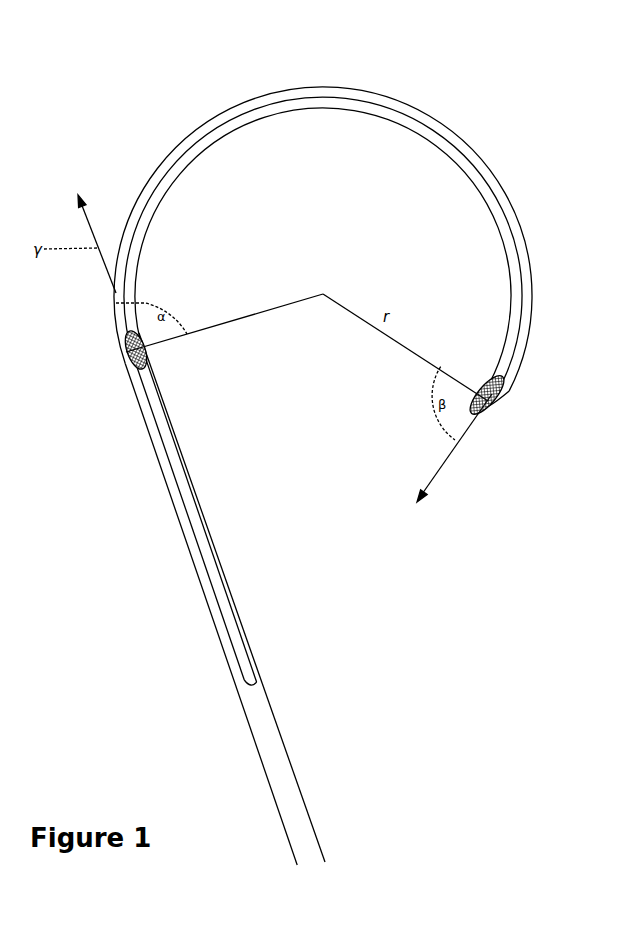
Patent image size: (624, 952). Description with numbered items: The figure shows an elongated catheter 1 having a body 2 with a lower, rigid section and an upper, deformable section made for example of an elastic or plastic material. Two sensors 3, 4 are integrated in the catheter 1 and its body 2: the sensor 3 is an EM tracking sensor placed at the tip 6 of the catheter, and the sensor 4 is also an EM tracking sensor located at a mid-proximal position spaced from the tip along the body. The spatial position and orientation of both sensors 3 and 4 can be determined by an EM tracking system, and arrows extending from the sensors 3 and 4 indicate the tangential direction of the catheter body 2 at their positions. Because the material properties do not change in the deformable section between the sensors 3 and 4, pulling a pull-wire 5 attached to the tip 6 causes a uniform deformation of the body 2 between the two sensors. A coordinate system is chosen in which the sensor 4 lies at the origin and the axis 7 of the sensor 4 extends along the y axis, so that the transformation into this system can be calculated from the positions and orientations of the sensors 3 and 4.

The elongated catheter 1 is at (148, 492).
The catheter body 2 is at (273, 93).
The sensor 3 is at (505, 396).
The sensor 4 is at (121, 351).
The pull-wire 5 is at (443, 477).
The tip 6 is at (505, 428).
The axis 7 is at (96, 247).